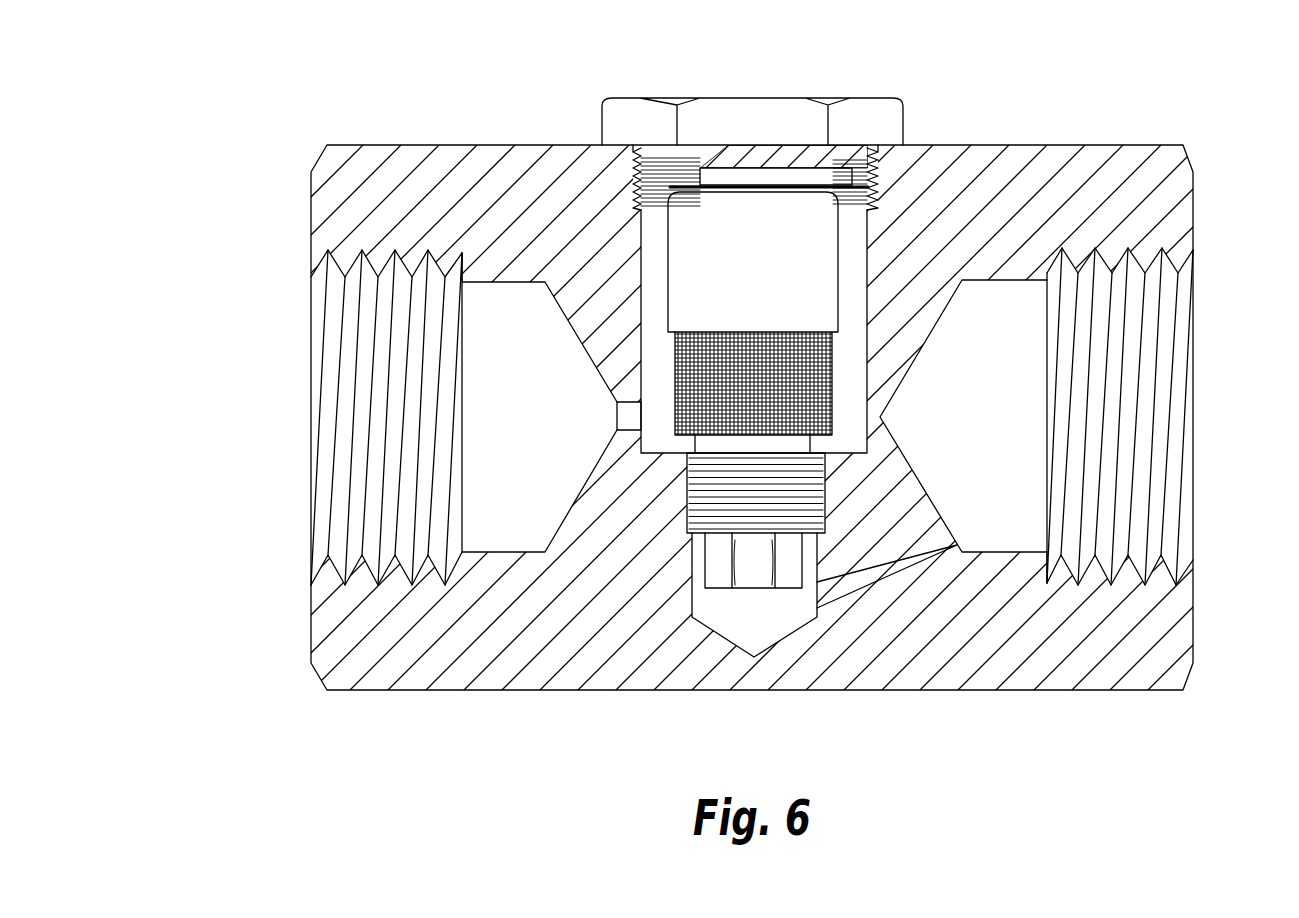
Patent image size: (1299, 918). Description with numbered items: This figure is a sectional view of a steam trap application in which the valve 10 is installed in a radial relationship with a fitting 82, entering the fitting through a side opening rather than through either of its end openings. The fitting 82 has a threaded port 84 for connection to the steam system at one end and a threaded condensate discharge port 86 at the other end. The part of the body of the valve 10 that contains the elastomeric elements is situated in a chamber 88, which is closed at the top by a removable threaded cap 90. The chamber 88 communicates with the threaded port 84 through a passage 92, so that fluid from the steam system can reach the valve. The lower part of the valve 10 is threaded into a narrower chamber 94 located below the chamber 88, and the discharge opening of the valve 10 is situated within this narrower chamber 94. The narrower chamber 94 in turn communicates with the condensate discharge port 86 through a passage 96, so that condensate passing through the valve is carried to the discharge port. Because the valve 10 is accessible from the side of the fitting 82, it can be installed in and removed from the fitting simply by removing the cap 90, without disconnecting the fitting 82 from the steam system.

The valve 10 is at (739, 276).
The fitting 82 is at (1045, 145).
The threaded port 84 is at (311, 380).
The threaded condensate discharge port 86 is at (1197, 352).
The chamber 88 is at (657, 278).
The removable threaded cap 90 is at (758, 98).
The passage 92 is at (630, 417).
The narrower chamber 94 is at (732, 602).
The passage 96 is at (895, 557).